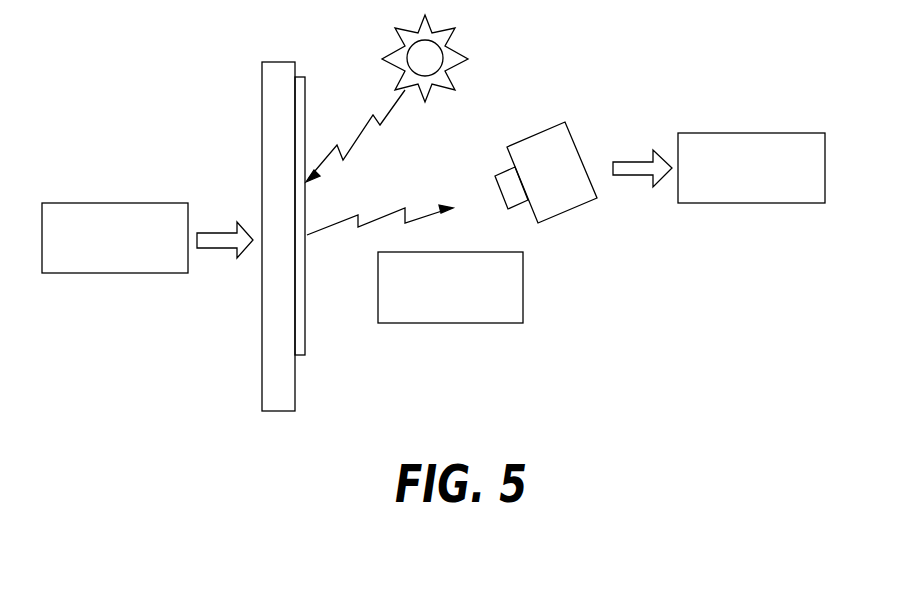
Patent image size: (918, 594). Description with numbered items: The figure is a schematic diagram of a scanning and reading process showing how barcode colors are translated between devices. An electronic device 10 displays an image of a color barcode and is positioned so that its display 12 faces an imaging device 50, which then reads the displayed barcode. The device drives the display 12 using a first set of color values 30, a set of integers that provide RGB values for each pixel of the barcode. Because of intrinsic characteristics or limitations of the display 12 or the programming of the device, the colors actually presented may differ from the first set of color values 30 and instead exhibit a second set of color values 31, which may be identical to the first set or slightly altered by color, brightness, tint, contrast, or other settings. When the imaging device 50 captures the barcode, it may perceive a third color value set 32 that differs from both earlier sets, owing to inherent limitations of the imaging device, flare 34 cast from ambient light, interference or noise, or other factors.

The electronic device 10 is at (433, 227).
The display 12 is at (305, 327).
The first set of color values 30 is at (113, 273).
The second set of color values 31 is at (452, 323).
The third color value set 32 is at (750, 203).
The flare 34 is at (455, 32).
The imaging device 50 is at (535, 132).